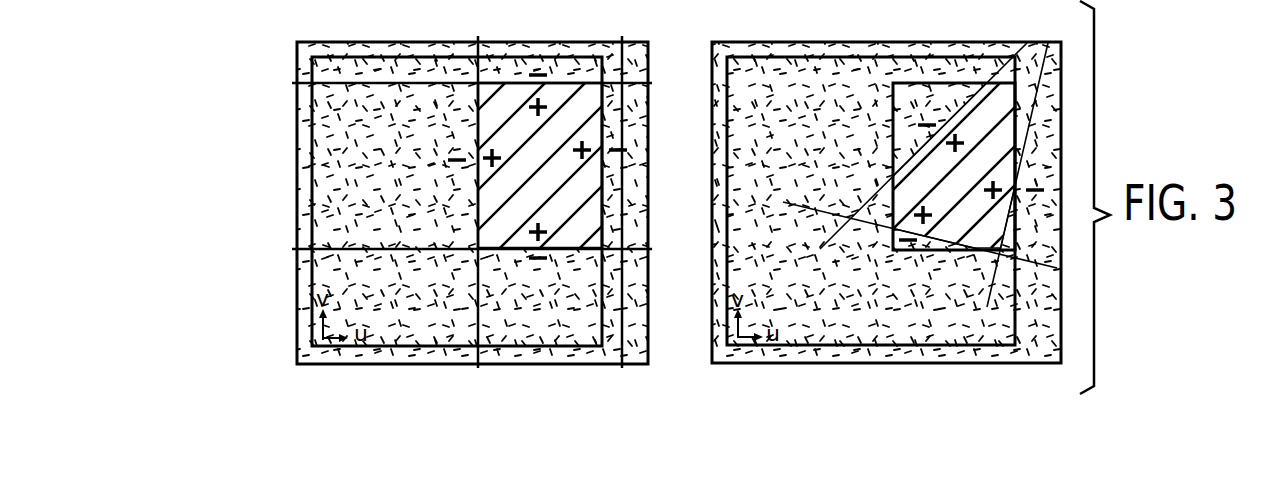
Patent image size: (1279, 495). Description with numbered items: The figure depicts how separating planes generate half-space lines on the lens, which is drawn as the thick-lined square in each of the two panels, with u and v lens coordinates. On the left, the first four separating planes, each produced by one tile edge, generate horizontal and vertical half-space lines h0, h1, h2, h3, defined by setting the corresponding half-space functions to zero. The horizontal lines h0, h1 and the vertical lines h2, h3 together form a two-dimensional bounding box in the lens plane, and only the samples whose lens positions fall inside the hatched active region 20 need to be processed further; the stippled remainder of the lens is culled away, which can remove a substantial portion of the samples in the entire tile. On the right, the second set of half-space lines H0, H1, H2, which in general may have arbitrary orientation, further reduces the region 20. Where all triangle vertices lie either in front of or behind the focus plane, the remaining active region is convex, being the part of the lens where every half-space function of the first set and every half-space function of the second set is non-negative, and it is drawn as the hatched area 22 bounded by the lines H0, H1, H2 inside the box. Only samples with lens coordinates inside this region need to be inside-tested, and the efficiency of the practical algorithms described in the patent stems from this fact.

The active region 20 is at (568, 120).
The clipped region of the sub-window bounded by half-planes 22 is at (988, 155).
The half-space line h0 is at (490, 88).
The half-space line h1 is at (490, 254).
The half-space line h2 is at (485, 220).
The half-space line h3 is at (629, 220).
The half-space line H0 is at (903, 226).
The half-space line H1 is at (910, 163).
The half-space line H2 is at (1007, 192).